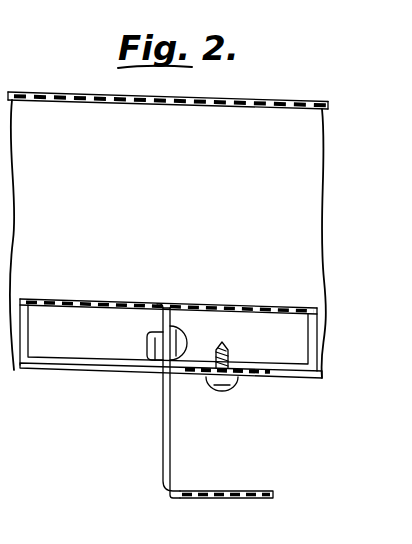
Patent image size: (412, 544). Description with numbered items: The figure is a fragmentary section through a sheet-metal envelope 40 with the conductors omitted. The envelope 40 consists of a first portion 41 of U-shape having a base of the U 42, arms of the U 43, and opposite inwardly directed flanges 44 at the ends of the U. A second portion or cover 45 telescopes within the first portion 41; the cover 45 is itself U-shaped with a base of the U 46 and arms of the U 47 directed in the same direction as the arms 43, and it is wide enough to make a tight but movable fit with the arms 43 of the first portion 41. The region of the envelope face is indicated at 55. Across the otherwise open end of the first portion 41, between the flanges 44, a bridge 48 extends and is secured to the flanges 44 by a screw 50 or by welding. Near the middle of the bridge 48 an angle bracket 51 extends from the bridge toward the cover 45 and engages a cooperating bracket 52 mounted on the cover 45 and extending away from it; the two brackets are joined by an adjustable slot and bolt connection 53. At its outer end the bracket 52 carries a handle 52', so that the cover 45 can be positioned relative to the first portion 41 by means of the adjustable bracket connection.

The envelope 40 is at (72, 84).
The base of the U 42 is at (252, 101).
The first portion 41 is at (200, 161).
The arms of the U 43 is at (230, 228).
The panel face 55 is at (104, 190).
The base of the U 46 is at (82, 299).
The cover 45 is at (212, 302).
The arms of the U 47 is at (168, 334).
The flanges 44 is at (50, 368).
The bridge 48 is at (263, 380).
The screw 50 is at (213, 390).
The angle bracket 51 is at (192, 334).
The slot and bolt connection 53 is at (160, 364).
The bracket 52 is at (142, 401).
The handle 52' is at (226, 513).